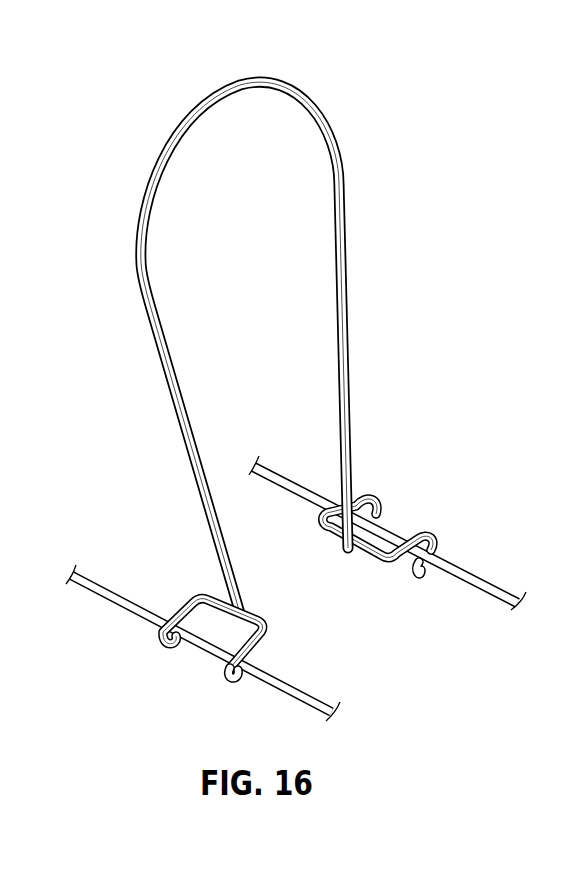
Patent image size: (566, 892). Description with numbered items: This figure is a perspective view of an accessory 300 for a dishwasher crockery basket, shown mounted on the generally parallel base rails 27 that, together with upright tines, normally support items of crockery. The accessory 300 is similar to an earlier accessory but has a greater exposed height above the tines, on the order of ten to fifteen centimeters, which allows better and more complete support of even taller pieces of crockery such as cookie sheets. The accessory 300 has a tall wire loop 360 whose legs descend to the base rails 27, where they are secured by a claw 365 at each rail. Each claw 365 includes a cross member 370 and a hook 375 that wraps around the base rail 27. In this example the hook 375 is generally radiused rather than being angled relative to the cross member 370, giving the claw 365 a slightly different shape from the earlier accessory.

The base rail 27 is at (118, 612).
The accessory 300 is at (287, 386).
The wire loop 360 is at (345, 297).
The claw 365 is at (248, 652).
The cross member 370 is at (384, 560).
The hook 375 is at (217, 680).